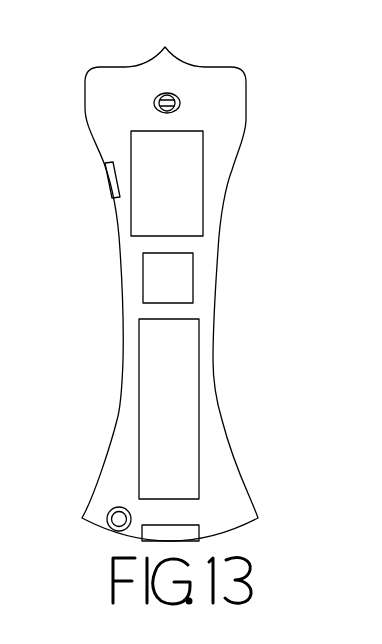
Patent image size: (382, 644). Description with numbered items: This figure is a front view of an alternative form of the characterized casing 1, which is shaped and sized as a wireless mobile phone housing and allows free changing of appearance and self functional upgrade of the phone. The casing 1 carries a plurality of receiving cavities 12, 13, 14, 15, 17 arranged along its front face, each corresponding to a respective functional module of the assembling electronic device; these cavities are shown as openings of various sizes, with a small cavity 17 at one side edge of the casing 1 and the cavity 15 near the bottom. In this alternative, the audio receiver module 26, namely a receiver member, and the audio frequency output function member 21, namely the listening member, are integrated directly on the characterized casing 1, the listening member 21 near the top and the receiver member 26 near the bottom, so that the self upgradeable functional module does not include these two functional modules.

The characterized casing 1 is at (225, 76).
The audio frequency output module 21 is at (180, 103).
The receiving cavity 12 is at (192, 169).
The receiving cavity 13 is at (183, 267).
The receiving cavity 14 is at (178, 372).
The receiving cavity 15 is at (188, 532).
The receiving cavity 17 is at (112, 180).
The audio receiver module 26 is at (118, 518).